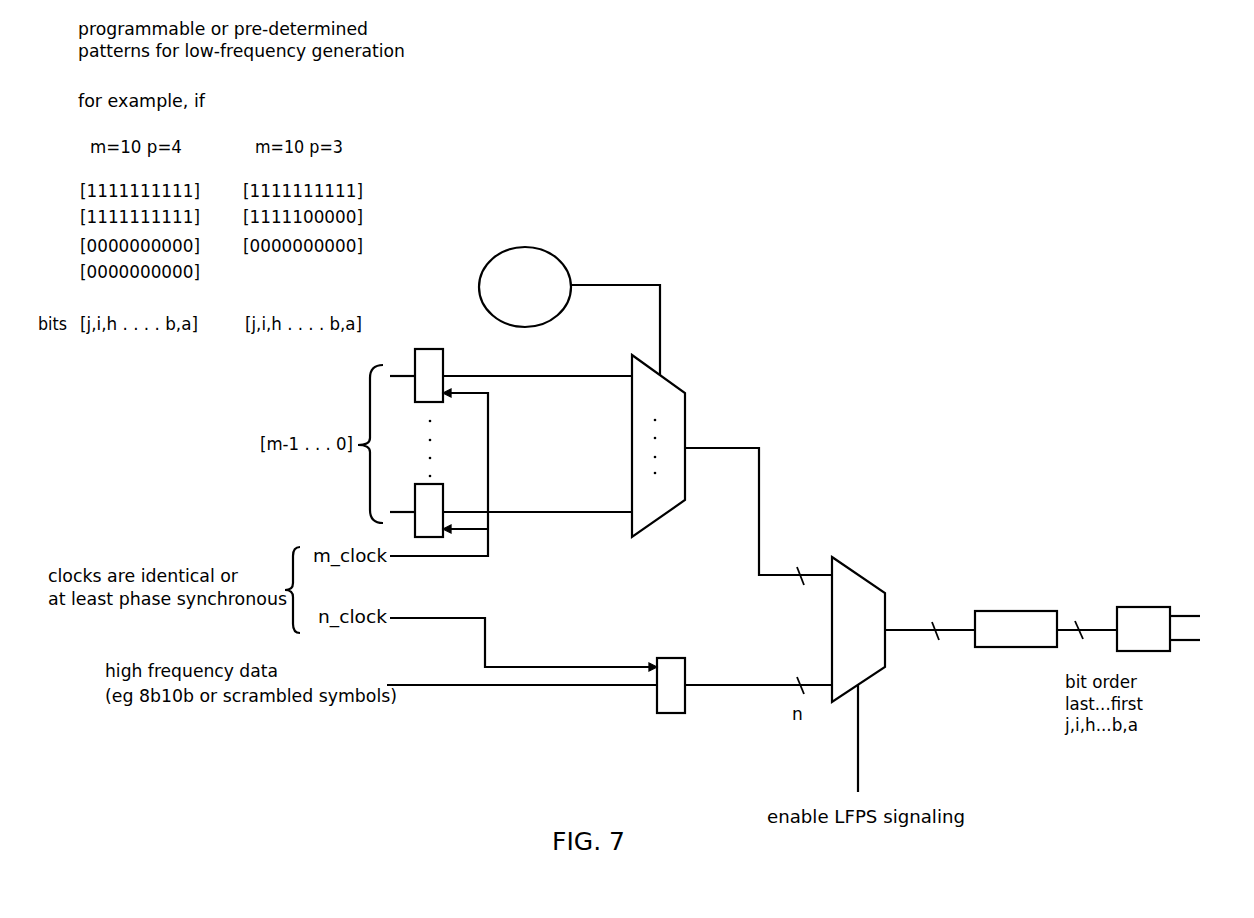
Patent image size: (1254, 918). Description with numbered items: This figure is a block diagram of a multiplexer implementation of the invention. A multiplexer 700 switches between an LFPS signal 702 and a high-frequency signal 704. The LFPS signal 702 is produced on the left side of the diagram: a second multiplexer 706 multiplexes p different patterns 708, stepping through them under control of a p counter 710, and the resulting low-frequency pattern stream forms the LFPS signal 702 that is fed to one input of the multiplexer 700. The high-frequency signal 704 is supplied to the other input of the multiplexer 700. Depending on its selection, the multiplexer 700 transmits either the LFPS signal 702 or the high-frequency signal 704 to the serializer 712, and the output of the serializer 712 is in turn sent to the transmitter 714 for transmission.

The multiplexer 700 is at (903, 632).
The LFPS signal 702 is at (758, 530).
The high-frequency signal 704 is at (708, 656).
The multiplexer 706 is at (693, 422).
The patterns 708 is at (511, 465).
The p counter 710 is at (569, 266).
The serializer 712 is at (1032, 673).
The transmitter 714 is at (1160, 585).